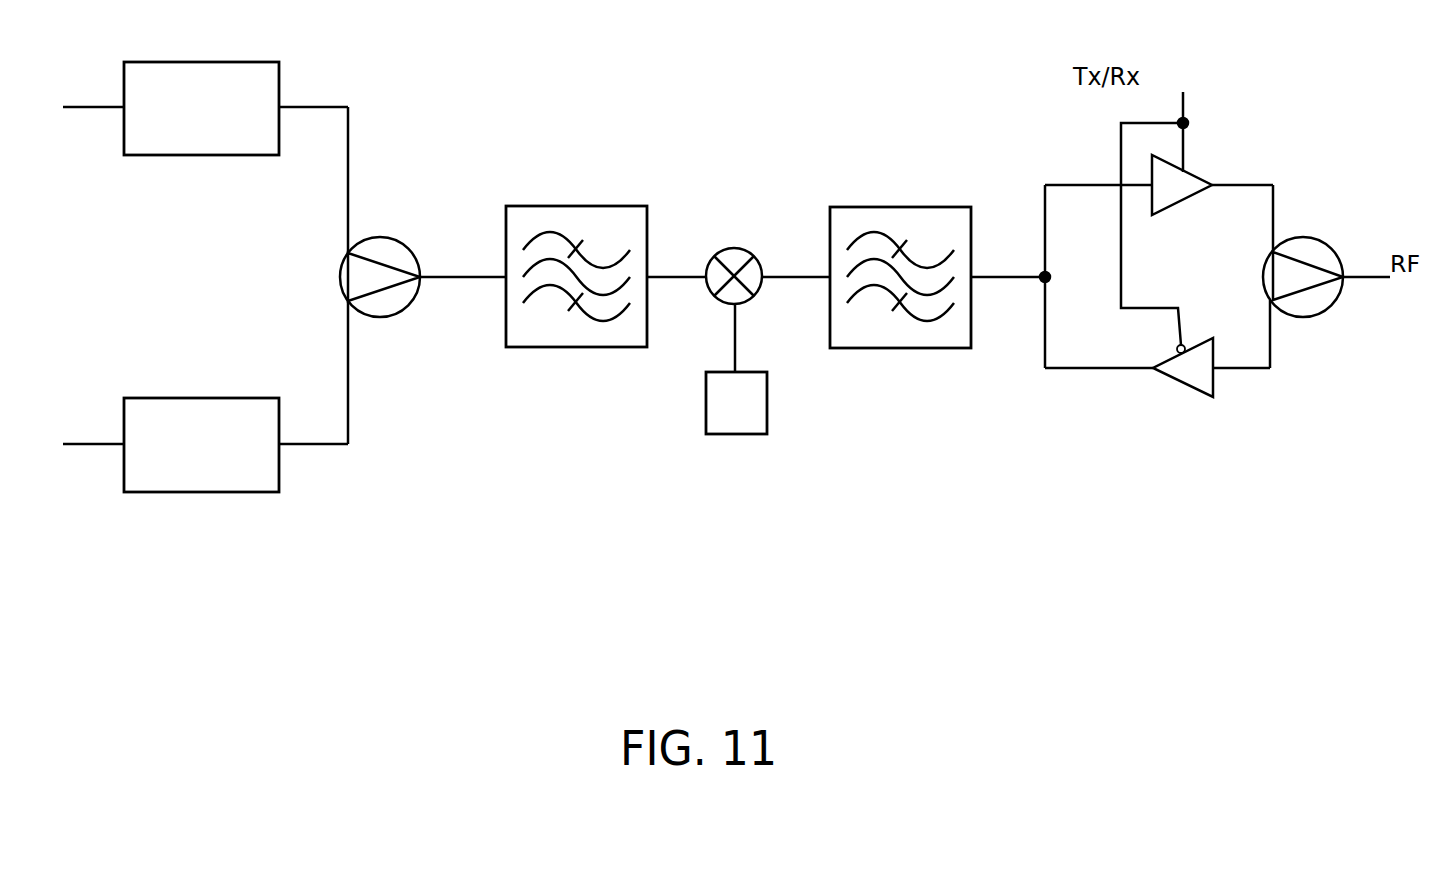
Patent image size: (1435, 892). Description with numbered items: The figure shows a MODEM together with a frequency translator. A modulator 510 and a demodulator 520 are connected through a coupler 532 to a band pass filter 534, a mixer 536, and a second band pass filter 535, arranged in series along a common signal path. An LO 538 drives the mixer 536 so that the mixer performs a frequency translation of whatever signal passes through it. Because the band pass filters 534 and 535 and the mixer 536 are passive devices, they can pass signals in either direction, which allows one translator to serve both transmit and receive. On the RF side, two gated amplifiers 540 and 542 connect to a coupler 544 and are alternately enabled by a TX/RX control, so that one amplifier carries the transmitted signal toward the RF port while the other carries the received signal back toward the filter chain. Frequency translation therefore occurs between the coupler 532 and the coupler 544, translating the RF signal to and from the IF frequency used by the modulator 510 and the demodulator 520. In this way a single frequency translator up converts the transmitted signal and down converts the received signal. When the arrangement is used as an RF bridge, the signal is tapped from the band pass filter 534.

The modulator 510 is at (188, 58).
The demodulator 520 is at (201, 397).
The coupler 532 is at (392, 236).
The band pass filter 534 is at (570, 204).
The band pass filter 535 is at (937, 206).
The mixer 536 is at (748, 246).
The LO 538 is at (797, 368).
The gated amplifier 540 is at (1202, 172).
The gated amplifier 542 is at (1187, 390).
The coupler 544 is at (1322, 237).